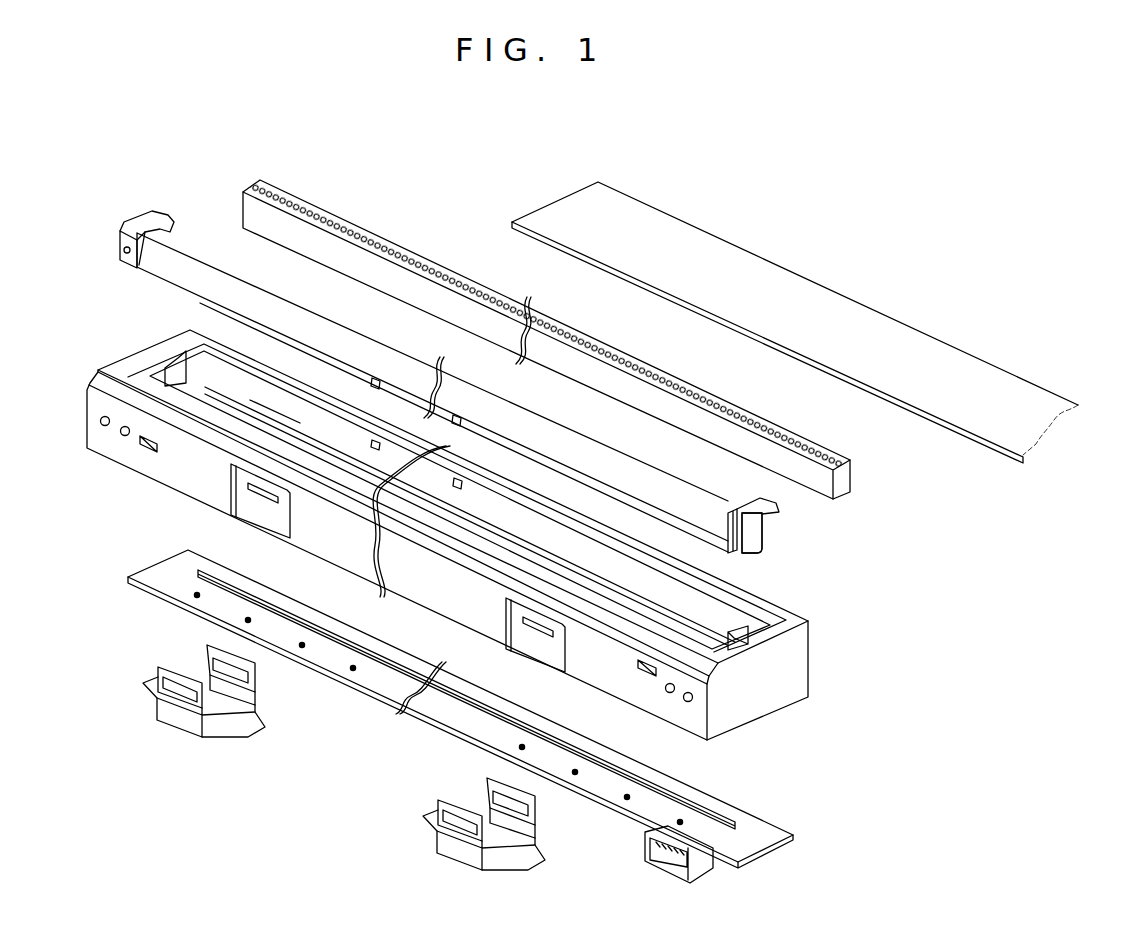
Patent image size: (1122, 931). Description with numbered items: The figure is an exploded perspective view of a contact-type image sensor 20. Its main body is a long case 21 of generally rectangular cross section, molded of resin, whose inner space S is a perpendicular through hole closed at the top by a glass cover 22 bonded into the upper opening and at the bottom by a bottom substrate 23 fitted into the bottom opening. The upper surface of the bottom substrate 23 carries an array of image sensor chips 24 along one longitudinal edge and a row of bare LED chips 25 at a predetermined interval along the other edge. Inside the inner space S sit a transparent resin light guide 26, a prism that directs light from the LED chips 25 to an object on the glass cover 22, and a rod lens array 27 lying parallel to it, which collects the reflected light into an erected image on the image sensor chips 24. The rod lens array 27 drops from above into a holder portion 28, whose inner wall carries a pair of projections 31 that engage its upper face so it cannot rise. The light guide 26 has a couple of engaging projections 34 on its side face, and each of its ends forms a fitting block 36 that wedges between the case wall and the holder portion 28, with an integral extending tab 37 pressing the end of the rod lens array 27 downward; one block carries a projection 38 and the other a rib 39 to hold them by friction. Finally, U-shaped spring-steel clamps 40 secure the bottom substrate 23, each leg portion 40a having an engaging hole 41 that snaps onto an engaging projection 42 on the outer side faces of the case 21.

The contact-type image sensor 20 is at (435, 237).
The case 21 is at (802, 650).
The glass cover 22 is at (748, 264).
The bottom substrate 23 is at (446, 732).
The image sensor chips 24 is at (248, 586).
The LED chips 25 is at (193, 597).
The light guide 26 is at (313, 320).
The rod lens array 27 is at (580, 332).
The holder portion 28 is at (750, 625).
The projections 31 is at (374, 440).
The engaging projections 34 is at (376, 378).
The fitting block 36 is at (758, 533).
The extending tab 37 is at (148, 220).
The projection 38 is at (124, 249).
The rib 39 is at (729, 514).
The metal clamps 40 is at (146, 700).
The leg portions 40a is at (488, 782).
The engaging hole 41 is at (540, 826).
The engaging projection 42 is at (276, 499).
The inner space S is at (263, 424).